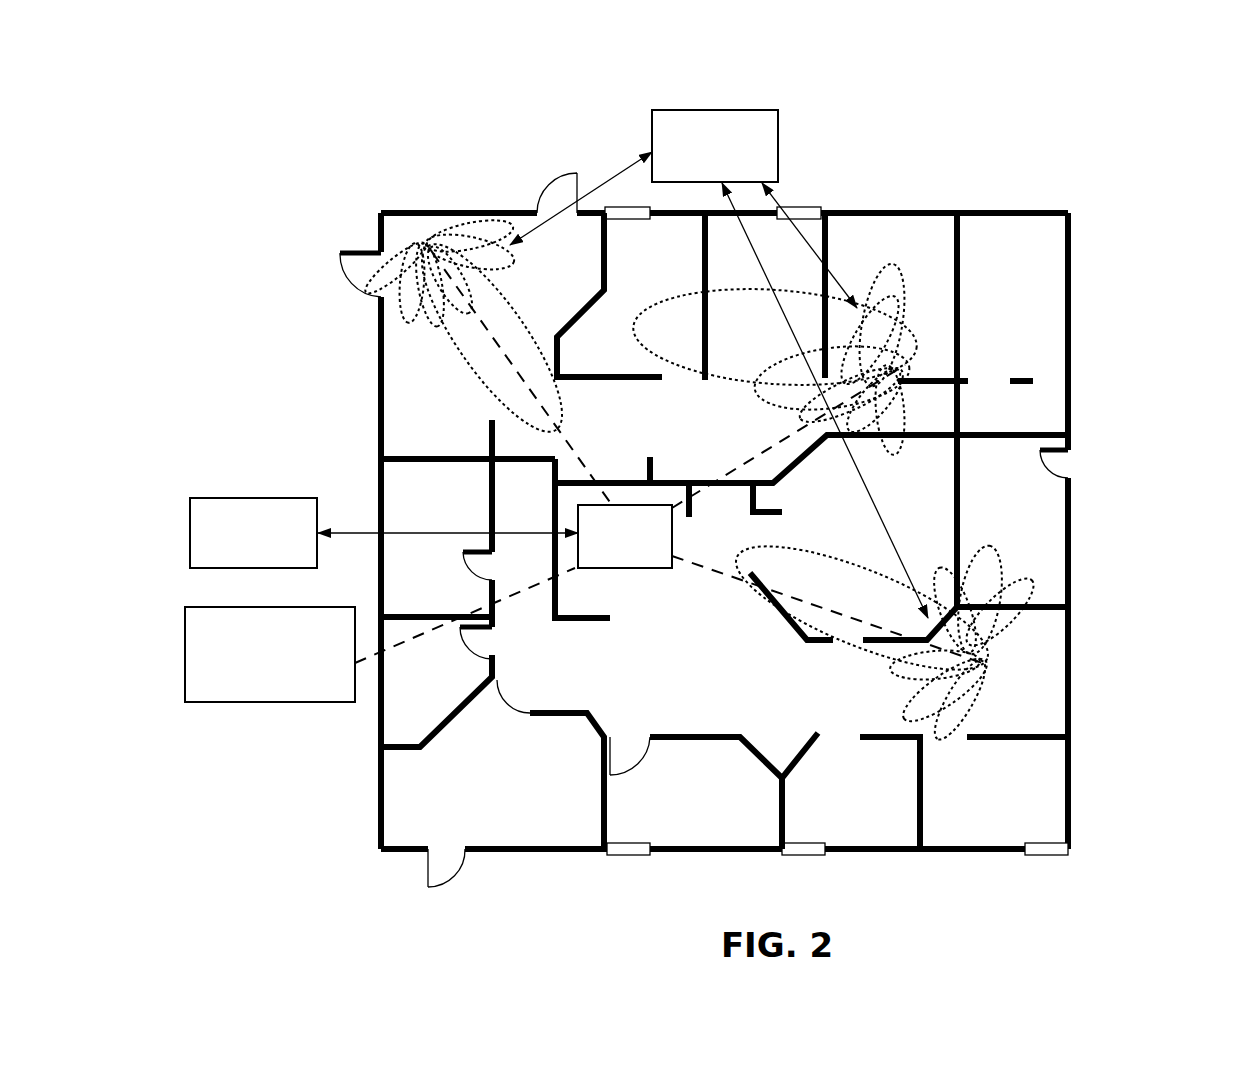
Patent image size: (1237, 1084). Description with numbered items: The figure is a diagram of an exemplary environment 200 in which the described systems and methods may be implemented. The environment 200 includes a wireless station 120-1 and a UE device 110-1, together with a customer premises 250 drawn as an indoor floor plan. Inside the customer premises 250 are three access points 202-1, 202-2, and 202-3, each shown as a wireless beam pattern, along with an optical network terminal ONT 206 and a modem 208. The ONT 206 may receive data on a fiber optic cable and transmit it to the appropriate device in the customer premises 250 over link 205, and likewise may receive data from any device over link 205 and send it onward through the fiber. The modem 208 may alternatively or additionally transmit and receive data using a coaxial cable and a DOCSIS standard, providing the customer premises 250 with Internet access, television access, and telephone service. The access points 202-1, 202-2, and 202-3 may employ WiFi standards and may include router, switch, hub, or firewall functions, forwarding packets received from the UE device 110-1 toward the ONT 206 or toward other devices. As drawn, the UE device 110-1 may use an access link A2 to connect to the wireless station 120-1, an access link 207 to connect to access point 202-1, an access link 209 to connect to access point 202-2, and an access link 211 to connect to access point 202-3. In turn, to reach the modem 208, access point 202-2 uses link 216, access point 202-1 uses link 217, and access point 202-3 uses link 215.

The environment 200 is at (328, 60).
The customer premises 250 is at (893, 213).
The modem 208 is at (715, 146).
The optical network terminal 206 is at (253, 533).
The wireless station 120-1 is at (270, 654).
The UE device 110-1 is at (625, 536).
The link 205 is at (425, 533).
The access link A2 is at (413, 640).
The access link 211 is at (580, 455).
The access link 207 is at (767, 440).
The access link 209 is at (737, 577).
The link 215 is at (581, 193).
The link 217 is at (830, 257).
The link 216 is at (907, 552).
The access point 202-3 is at (388, 230).
The access point 202-1 is at (915, 358).
The access point 202-2 is at (1005, 660).